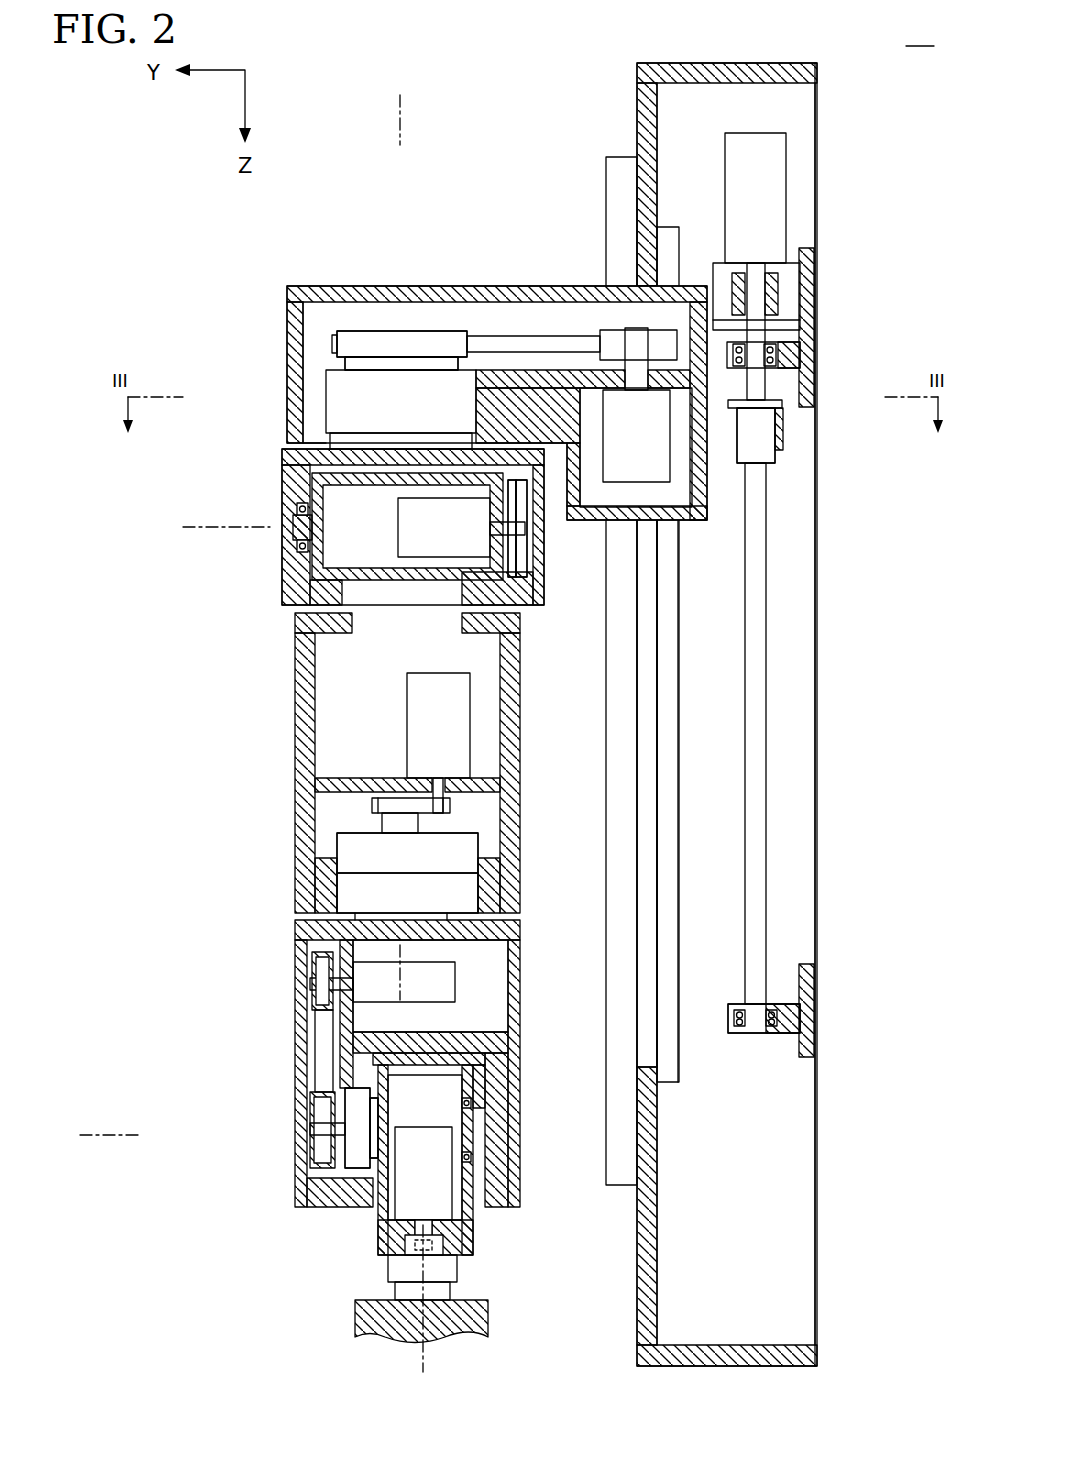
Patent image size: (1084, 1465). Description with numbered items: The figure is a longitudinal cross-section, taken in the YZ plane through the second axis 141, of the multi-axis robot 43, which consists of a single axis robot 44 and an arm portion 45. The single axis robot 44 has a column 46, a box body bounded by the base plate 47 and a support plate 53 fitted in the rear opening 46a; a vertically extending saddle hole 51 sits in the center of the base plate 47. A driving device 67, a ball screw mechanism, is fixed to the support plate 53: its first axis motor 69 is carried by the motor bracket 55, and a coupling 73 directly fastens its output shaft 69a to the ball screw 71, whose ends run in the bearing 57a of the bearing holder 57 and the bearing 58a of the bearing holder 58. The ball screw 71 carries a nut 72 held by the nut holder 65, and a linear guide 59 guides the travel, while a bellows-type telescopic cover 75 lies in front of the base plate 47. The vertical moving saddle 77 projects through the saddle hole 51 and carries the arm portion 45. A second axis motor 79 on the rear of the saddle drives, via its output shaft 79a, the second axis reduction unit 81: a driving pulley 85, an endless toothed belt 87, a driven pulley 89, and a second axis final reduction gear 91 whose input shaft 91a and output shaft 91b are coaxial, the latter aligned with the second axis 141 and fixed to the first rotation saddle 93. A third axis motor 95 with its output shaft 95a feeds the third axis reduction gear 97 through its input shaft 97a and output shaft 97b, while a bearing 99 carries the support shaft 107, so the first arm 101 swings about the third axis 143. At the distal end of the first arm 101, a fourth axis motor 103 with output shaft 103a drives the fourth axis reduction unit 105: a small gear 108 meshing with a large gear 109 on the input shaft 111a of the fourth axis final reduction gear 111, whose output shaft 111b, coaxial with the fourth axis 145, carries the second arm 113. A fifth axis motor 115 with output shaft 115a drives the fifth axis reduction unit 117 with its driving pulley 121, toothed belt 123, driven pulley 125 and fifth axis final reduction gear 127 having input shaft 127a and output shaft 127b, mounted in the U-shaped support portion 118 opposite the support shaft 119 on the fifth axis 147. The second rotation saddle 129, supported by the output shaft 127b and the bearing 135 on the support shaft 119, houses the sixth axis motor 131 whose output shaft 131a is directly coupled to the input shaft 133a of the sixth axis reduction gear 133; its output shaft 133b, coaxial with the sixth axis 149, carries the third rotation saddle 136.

The multi-axis robot 43 is at (920, 33).
The single axis robot 44 is at (613, 80).
The arm portion 45 is at (252, 649).
The column 46 is at (760, 63).
The opening 46a is at (817, 85).
The base plate 47 is at (650, 1140).
The saddle hole 51 is at (640, 1065).
The support plate 53 is at (814, 362).
The motor bracket 55 is at (797, 265).
The bearing holder 57 is at (778, 355).
The bearing 57a is at (782, 405).
The bearing holder 58 is at (738, 1010).
The bearing 58a is at (738, 1026).
The linear guide 59 is at (668, 1082).
The nut holder 65 is at (776, 425).
The driving device 67 is at (800, 548).
The first axis motor 69 is at (788, 150).
The output shaft 69a is at (757, 262).
The ball screw 71 is at (766, 628).
The nut 72 is at (778, 458).
The coupling 73 is at (800, 300).
The telescopic cover 75 is at (612, 157).
The vertical moving saddle 77 is at (290, 310).
The second axis motor 79 is at (640, 483).
The output shaft 79a is at (657, 385).
The second axis reduction unit 81 is at (372, 213).
The driving pulley 85 is at (610, 335).
The endless toothed belt 87 is at (527, 338).
The driven pulley 89 is at (440, 335).
The second axis final reduction gear 91 is at (432, 255).
The input shaft 91a is at (355, 333).
The output shaft 91b is at (333, 345).
The first rotation saddle 93 is at (283, 470).
The third axis motor 95 is at (422, 557).
The output shaft 95a is at (492, 515).
The third axis reduction gear 97 is at (540, 640).
The input shaft 97a is at (515, 560).
The output shaft 97b is at (526, 555).
The bearing 99 is at (296, 553).
The first arm 101 is at (296, 670).
The fourth axis motor 103 is at (407, 708).
The output shaft 103a is at (446, 795).
The fourth axis reduction unit 105 is at (146, 793).
The support shaft 107 is at (298, 520).
The small gear 108 is at (385, 823).
The large gear 109 is at (375, 805).
The fourth axis final reduction gear 111 is at (211, 853).
The input shaft 111a is at (338, 876).
The output shaft 111b is at (338, 902).
The second arm 113 is at (512, 965).
The fifth axis motor 115 is at (475, 977).
The output shaft 115a is at (312, 984).
The fifth axis reduction unit 117 is at (146, 1155).
The support portion 118 is at (282, 1193).
The support shaft 119 is at (472, 1160).
The driving pulley 121 is at (314, 1000).
The toothed belt 123 is at (316, 1040).
The driven pulley 125 is at (316, 1100).
The fifth axis final reduction gear 127 is at (211, 1110).
The input shaft 127a is at (372, 1102).
The output shaft 127b is at (348, 1092).
The second rotation saddle 129 is at (472, 1255).
The sixth axis motor 131 is at (405, 1135).
The output shaft 131a is at (436, 1243).
The sixth axis reduction gear 133 is at (298, 1235).
The input shaft 133a is at (402, 1245).
The output shaft 133b is at (392, 1292).
The bearing 135 is at (472, 1103).
The third rotation saddle 136 is at (357, 1303).
The second axis 141 is at (403, 118).
The third axis 143 is at (218, 525).
The fourth axis 145 is at (400, 985).
The fifth axis 147 is at (109, 1151).
The sixth axis 149 is at (423, 1350).